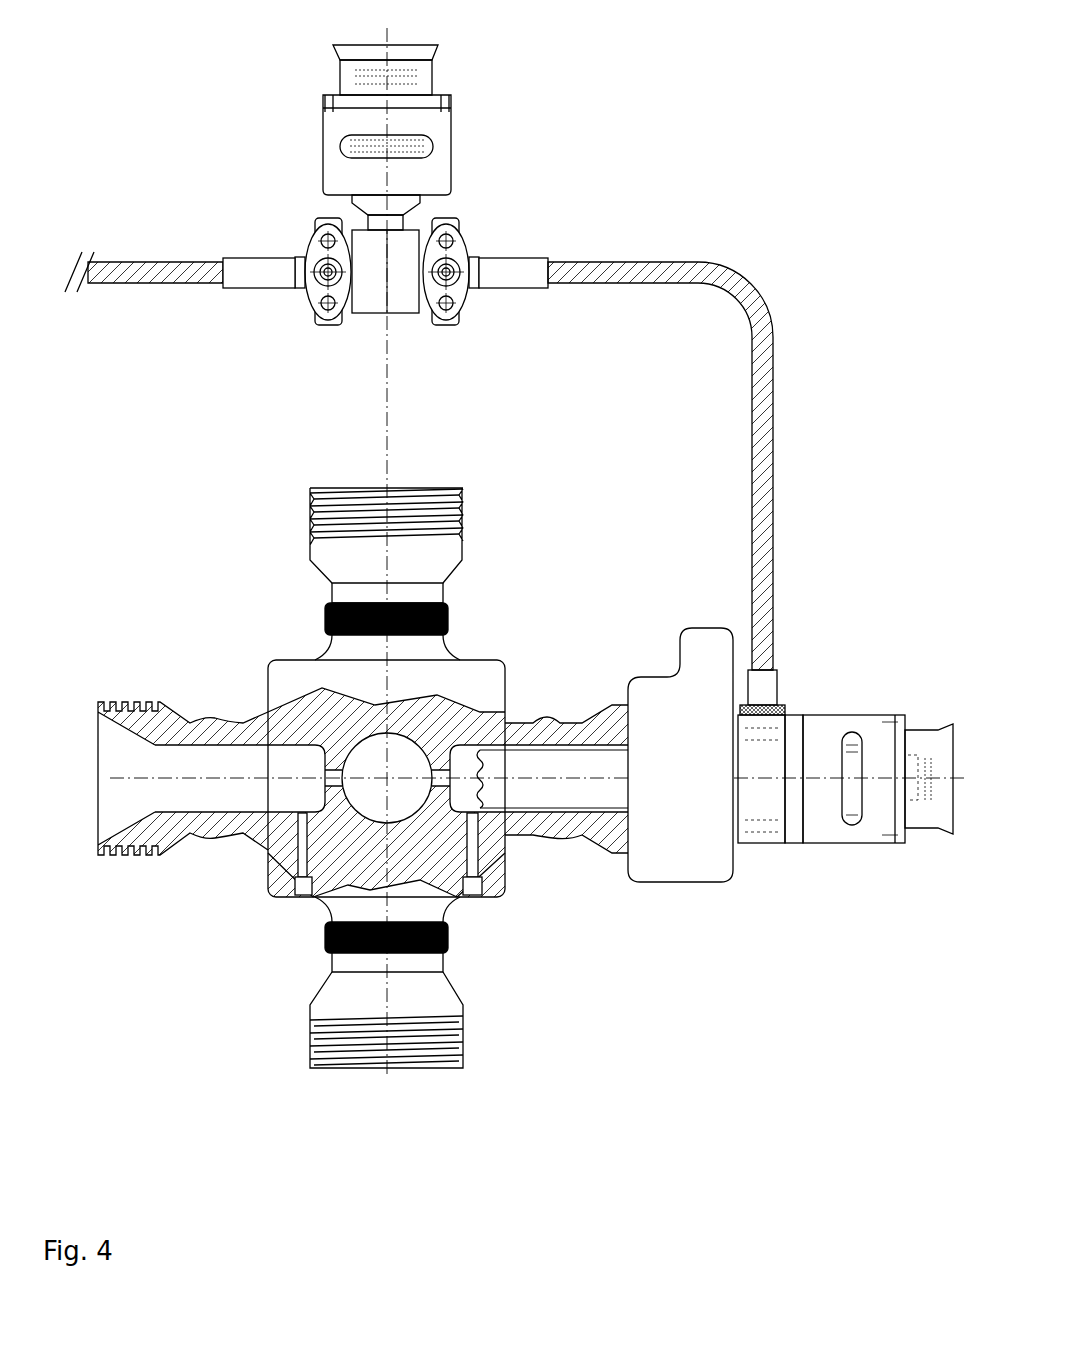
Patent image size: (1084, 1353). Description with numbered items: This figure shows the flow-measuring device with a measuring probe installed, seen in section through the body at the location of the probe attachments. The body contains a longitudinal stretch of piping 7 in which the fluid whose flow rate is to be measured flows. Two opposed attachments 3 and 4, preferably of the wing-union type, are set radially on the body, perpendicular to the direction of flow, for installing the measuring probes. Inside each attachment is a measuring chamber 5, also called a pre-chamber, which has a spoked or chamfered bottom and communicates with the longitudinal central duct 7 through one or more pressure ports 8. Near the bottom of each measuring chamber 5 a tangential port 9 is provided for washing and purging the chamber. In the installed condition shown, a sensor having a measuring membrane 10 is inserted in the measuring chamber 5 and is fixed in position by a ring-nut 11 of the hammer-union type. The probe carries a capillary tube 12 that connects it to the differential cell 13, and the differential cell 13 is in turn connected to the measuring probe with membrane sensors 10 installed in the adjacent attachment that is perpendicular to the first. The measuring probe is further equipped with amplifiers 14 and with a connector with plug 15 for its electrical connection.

The attachment 3 is at (325, 488).
The attachment 4 is at (165, 839).
The measuring chamber 5 is at (275, 767).
The longitudinal stretch of piping 7 is at (388, 777).
The pressure port 8 is at (333, 758).
The tangential port 9 is at (473, 907).
The measuring membrane 10 is at (497, 767).
The ring-nut 11 is at (680, 890).
The capillary tube 12 is at (193, 278).
The differential cell 13 is at (392, 318).
The amplifier 14 is at (833, 832).
The connector with plug 15 is at (923, 872).